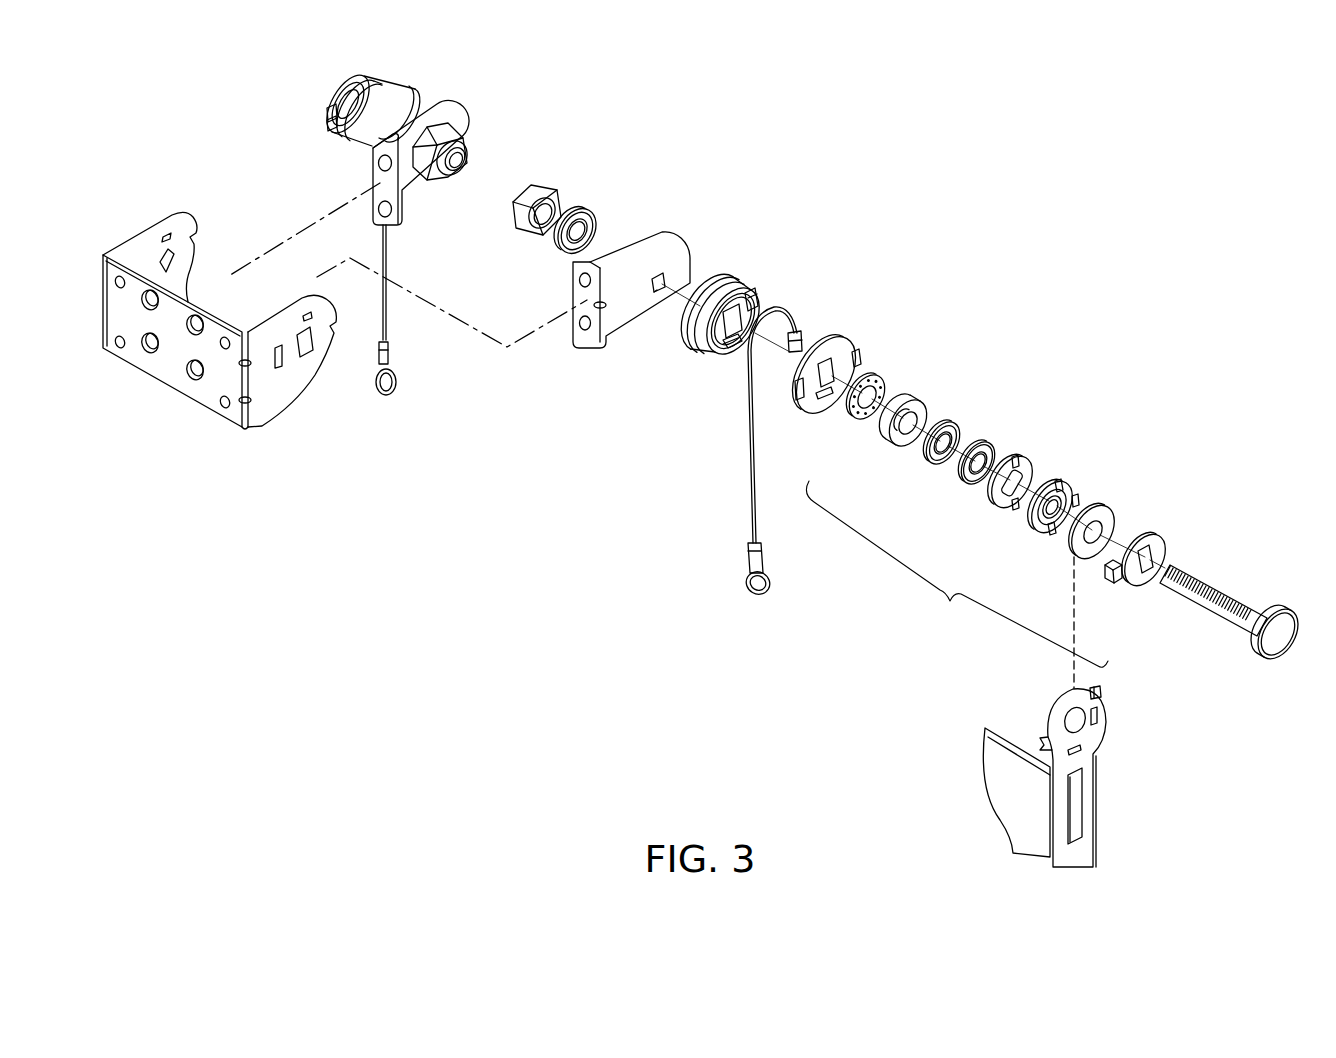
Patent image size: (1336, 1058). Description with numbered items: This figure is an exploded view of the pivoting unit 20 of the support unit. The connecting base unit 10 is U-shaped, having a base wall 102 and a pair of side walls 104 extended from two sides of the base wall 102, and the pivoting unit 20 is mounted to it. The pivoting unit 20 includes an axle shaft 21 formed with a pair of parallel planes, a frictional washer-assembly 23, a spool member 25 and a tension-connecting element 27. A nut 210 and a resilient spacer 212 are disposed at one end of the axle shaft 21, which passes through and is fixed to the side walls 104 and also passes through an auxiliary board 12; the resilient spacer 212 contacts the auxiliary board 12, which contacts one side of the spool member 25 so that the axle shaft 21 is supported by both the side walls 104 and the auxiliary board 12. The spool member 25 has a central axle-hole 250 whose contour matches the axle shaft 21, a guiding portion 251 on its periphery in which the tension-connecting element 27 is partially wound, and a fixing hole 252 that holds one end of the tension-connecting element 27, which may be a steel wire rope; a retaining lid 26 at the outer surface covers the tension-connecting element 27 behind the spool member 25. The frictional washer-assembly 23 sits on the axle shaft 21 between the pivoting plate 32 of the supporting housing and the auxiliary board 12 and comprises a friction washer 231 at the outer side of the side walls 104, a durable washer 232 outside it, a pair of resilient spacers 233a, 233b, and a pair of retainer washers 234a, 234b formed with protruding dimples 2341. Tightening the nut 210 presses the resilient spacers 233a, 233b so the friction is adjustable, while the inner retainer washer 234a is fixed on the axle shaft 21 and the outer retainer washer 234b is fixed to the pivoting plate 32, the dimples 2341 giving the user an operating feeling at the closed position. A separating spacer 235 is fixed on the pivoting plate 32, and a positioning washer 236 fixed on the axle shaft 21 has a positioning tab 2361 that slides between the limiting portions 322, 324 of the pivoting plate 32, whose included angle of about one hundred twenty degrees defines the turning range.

The connecting base unit 10 is at (219, 343).
The base wall 102 is at (170, 376).
The side walls 104 is at (140, 236).
The auxiliary board 12 is at (462, 121).
The pivoting unit 20 is at (326, 105).
The nut 210 is at (540, 186).
The resilient spacer 212 is at (585, 210).
The axle shaft 21 is at (1225, 593).
The frictional washer-assembly 23 is at (983, 517).
The friction washer 231 is at (853, 418).
The durable washer 232 is at (890, 446).
The resilient spacer 233a is at (930, 463).
The resilient spacer 233b is at (965, 481).
The inner retainer washer 234a is at (1026, 476).
The outer retainer washer 234b is at (1040, 530).
The protruding dimples 2341 is at (1016, 458).
The separating spacer 235 is at (1085, 561).
The positioning washer 236 is at (1114, 587).
The positioning tab 2361 is at (1108, 577).
The spool member 25 is at (729, 324).
The central axle-hole 250 is at (733, 350).
The guiding portion 251 is at (703, 333).
The fixing hole 252 is at (752, 310).
The retaining lid 26 is at (838, 346).
The tension-connecting element 27 is at (748, 487).
The pivoting plate 32 is at (1091, 774).
The limiting portion 322 is at (1102, 693).
The limiting portion 324 is at (1045, 740).